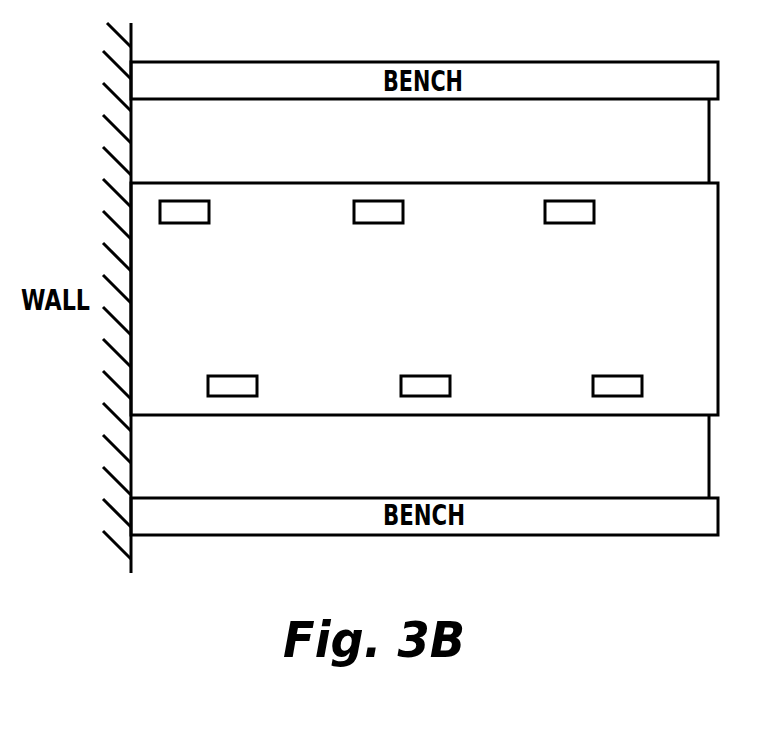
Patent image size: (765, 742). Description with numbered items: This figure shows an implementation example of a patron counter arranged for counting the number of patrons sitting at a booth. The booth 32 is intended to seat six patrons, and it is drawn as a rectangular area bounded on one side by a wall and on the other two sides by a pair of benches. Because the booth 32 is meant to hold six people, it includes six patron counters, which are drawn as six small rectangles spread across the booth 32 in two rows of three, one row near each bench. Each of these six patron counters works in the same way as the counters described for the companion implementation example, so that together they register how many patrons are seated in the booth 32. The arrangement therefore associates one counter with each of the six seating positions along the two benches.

The booth 32 is at (443, 316).